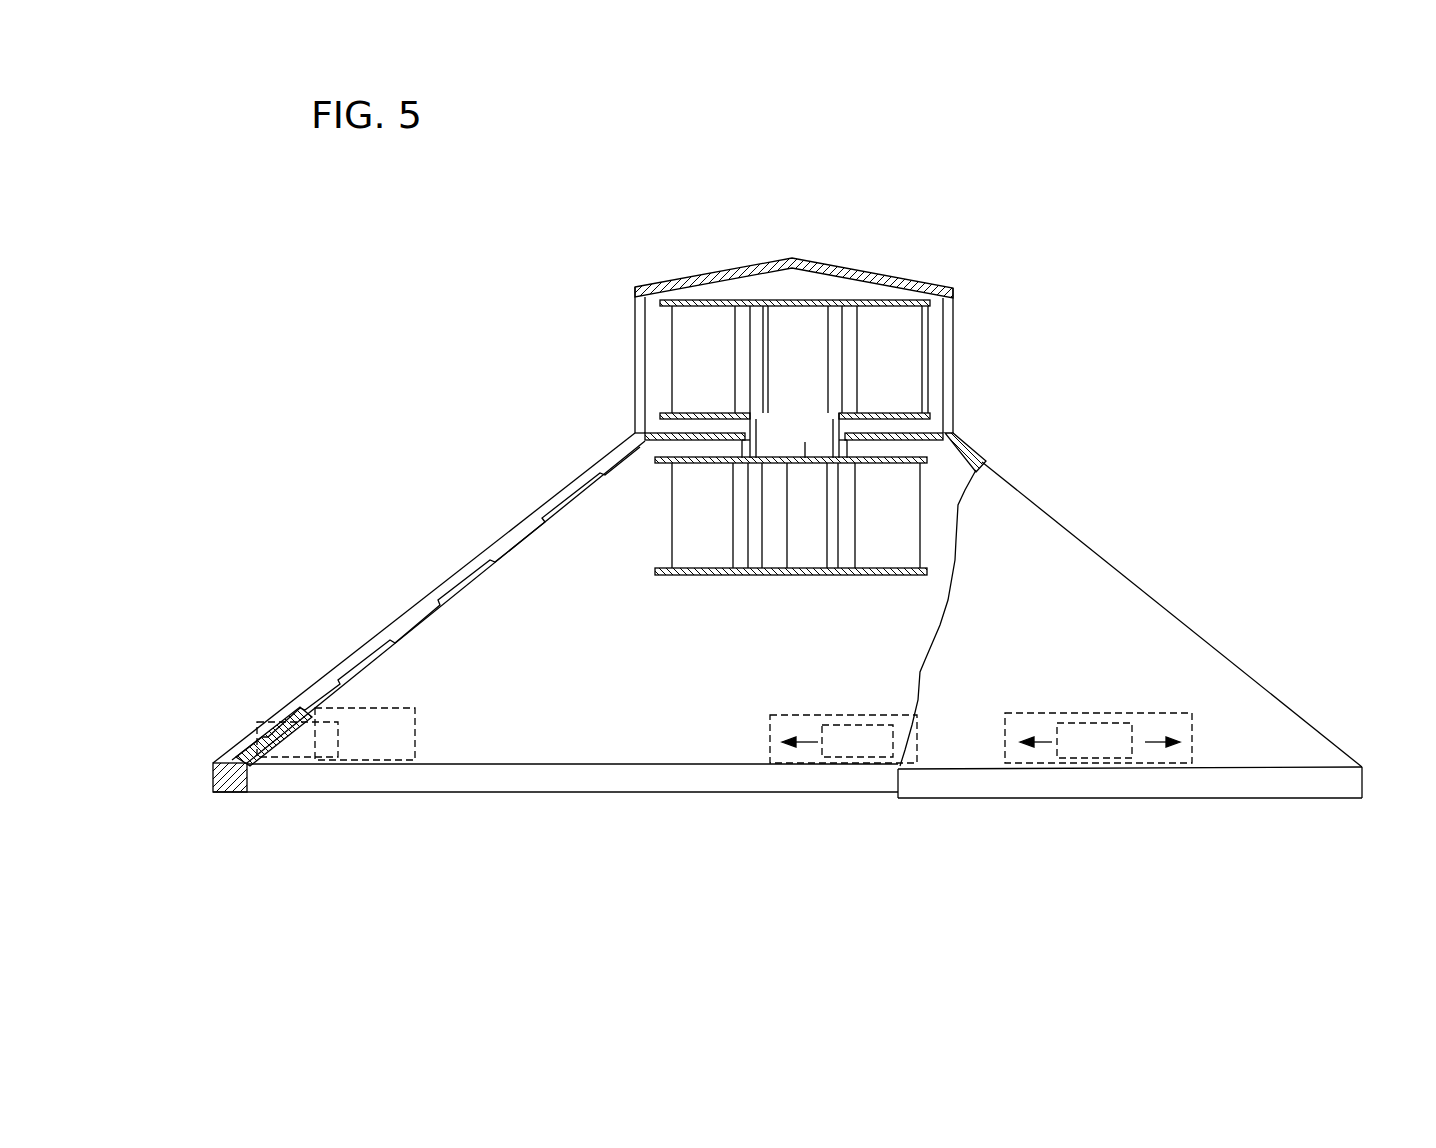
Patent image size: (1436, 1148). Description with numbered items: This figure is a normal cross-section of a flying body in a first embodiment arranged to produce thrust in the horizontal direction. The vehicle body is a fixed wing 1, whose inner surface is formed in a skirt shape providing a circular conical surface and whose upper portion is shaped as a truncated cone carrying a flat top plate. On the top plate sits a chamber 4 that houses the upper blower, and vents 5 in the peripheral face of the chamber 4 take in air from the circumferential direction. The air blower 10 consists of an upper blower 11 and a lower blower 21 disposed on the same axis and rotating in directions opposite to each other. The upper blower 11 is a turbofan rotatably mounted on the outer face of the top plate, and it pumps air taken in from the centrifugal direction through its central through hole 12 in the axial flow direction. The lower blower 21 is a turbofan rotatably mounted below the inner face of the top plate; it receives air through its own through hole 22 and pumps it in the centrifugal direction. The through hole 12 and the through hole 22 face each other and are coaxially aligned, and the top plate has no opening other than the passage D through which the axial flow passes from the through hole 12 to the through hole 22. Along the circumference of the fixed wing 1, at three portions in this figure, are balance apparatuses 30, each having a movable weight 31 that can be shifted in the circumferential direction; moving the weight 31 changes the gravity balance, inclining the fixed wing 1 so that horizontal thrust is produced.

The fixed wing 1 is at (1190, 613).
The chamber 4 is at (910, 278).
The vents 5 is at (630, 327).
The air blower 10 is at (975, 401).
The upper blower 11 is at (655, 378).
The through hole 12 is at (803, 418).
The lower blower 21 is at (662, 513).
The through hole 22 is at (787, 462).
The passage D is at (805, 442).
The balance apparatuses 30 is at (372, 760).
The movable weight 31 is at (1105, 763).